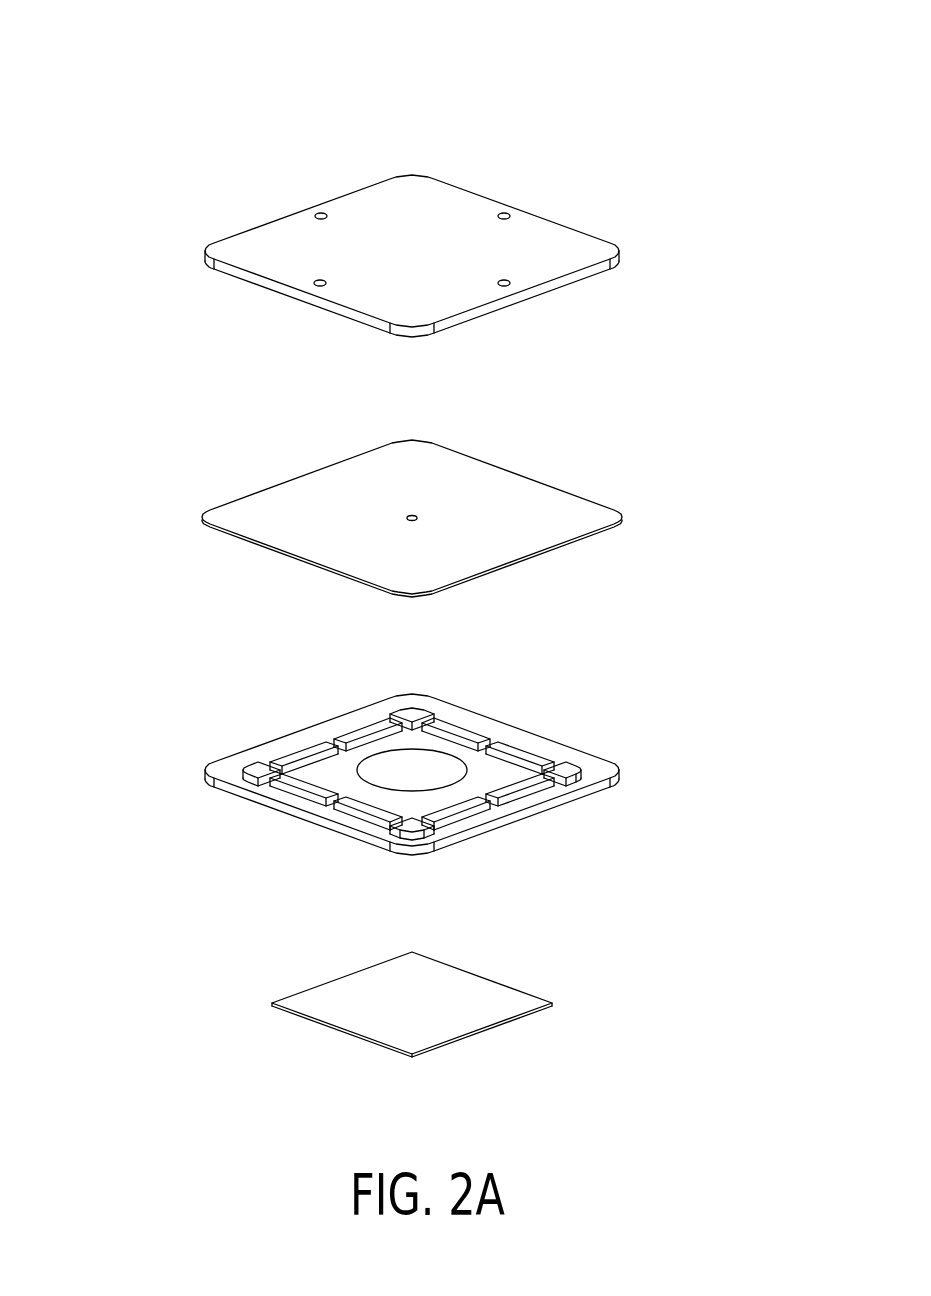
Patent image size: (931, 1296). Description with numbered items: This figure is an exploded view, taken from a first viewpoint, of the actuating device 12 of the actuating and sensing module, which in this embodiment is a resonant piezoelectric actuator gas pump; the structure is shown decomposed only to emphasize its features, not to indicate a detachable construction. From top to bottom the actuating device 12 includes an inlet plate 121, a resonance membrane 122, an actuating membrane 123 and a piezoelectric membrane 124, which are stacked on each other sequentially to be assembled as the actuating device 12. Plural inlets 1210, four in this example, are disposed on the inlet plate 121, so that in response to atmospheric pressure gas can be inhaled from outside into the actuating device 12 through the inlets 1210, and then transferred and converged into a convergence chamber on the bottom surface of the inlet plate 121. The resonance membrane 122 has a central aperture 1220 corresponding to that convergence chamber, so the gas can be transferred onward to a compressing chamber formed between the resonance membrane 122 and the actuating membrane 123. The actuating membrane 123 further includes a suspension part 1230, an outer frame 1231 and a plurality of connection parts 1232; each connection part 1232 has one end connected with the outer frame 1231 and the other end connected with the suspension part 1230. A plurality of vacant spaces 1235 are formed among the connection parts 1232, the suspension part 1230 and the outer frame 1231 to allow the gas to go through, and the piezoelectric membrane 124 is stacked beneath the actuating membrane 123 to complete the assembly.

The actuating device 12 is at (783, 33).
The inlet plate 121 is at (575, 255).
The inlets 1210 is at (318, 212).
The resonance membrane 122 is at (639, 523).
The central aperture 1220 is at (417, 513).
The actuating membrane 123 is at (632, 753).
The suspension part 1230 is at (322, 770).
The outer frame 1231 is at (227, 772).
The connection parts 1232 is at (317, 802).
The vacant spaces 1235 is at (428, 718).
The piezoelectric membrane 124 is at (455, 993).